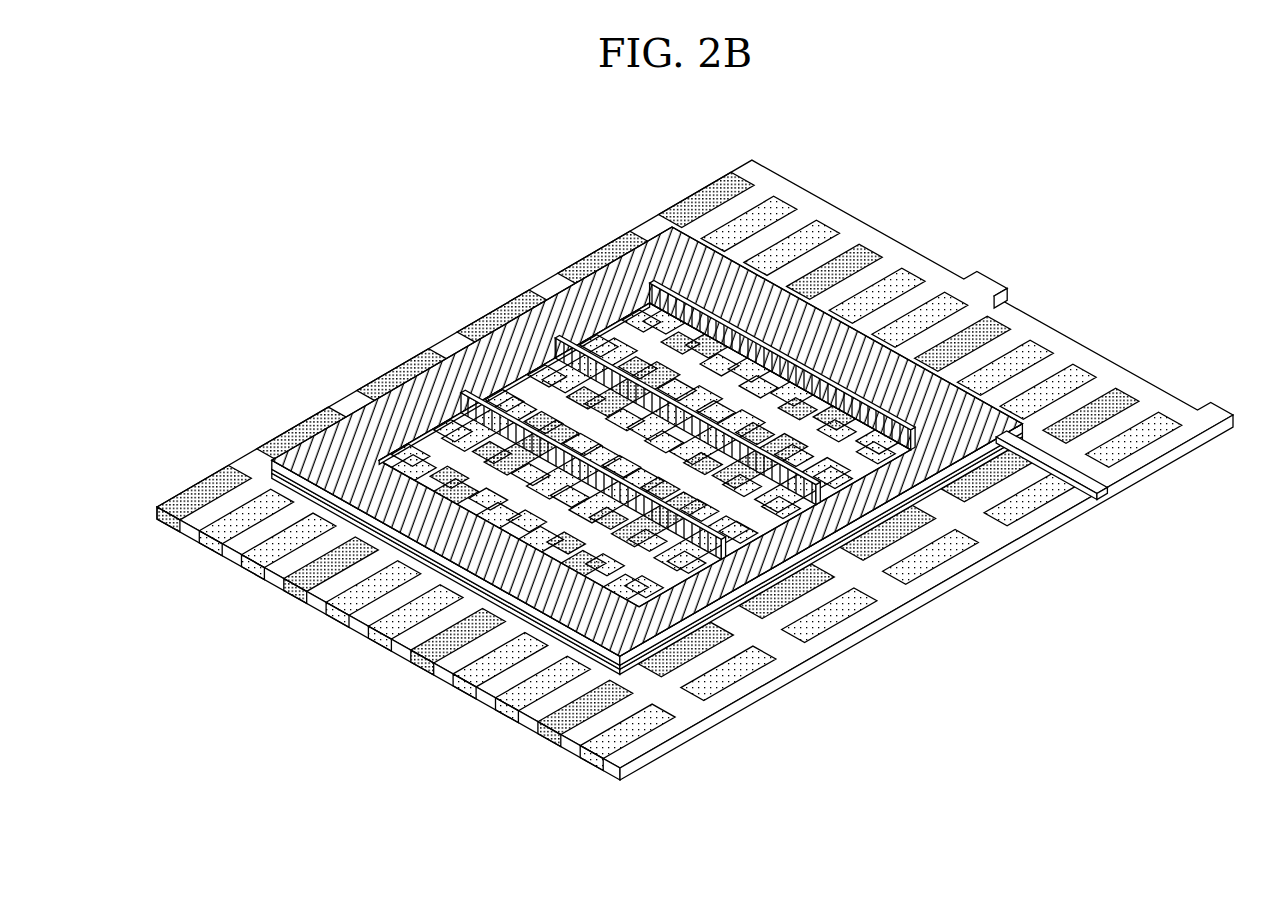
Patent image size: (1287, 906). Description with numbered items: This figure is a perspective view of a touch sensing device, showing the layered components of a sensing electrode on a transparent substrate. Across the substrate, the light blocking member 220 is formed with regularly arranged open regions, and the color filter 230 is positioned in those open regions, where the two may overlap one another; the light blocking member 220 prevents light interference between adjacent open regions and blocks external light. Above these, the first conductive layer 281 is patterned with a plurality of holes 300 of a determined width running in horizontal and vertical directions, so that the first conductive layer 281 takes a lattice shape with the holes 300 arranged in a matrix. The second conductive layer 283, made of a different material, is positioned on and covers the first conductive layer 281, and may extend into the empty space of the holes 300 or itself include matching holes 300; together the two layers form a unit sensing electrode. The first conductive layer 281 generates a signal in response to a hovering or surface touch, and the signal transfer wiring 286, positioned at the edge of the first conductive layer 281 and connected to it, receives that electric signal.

The light blocking member 220 is at (320, 578).
The color filter 230 is at (360, 620).
The first conductive layer 281 is at (517, 707).
The second conductive layer 283 is at (967, 423).
The signal transfer wiring 286 is at (1097, 480).
The holes 300 is at (463, 460).